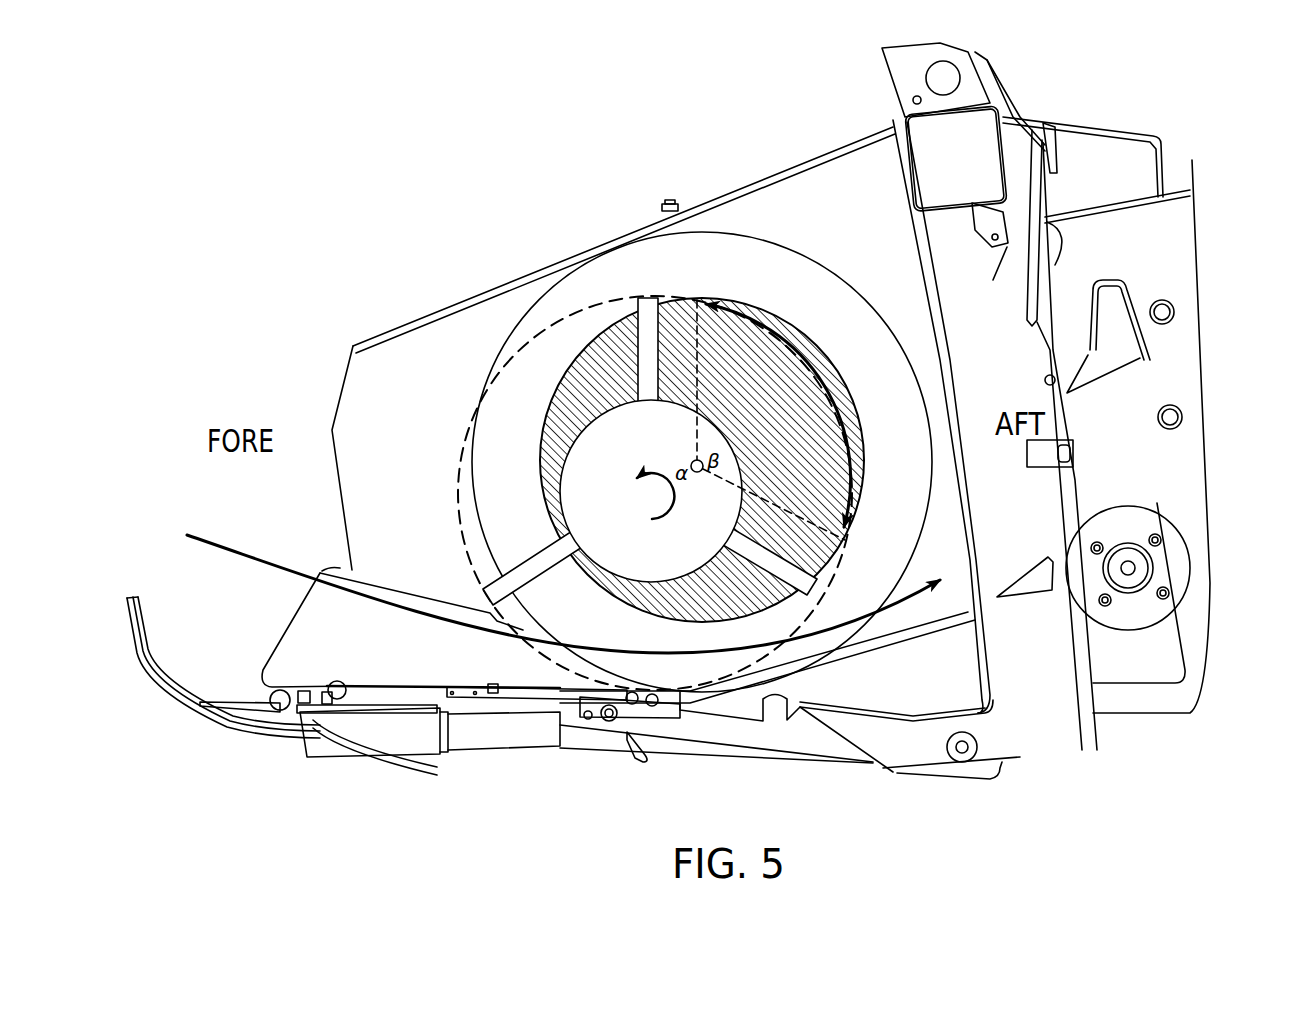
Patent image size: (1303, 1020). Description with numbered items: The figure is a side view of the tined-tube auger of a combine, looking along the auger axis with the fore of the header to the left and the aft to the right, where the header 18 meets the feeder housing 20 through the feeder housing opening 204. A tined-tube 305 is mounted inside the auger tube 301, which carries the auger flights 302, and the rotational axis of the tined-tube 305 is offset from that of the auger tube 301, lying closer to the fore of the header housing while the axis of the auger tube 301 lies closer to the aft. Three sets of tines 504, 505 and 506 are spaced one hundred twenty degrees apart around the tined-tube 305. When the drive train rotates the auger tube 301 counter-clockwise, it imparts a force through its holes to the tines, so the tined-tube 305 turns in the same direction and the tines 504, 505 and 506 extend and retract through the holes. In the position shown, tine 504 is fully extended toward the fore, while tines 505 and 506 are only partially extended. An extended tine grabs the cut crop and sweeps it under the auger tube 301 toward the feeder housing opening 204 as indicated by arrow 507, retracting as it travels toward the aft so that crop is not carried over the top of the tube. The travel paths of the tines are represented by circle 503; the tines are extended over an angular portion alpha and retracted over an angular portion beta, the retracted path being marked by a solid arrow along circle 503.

The header 18 is at (580, 205).
The feeder housing 20 is at (1165, 222).
The feeder housing opening 204 is at (977, 590).
The auger tube 301 is at (767, 423).
The auger flights 302 is at (768, 268).
The tined-tube 305 is at (653, 492).
The circle 503 is at (460, 428).
The tine 504 is at (490, 593).
The tine 505 is at (649, 312).
The tine 506 is at (815, 590).
The arrow 507 is at (433, 630).